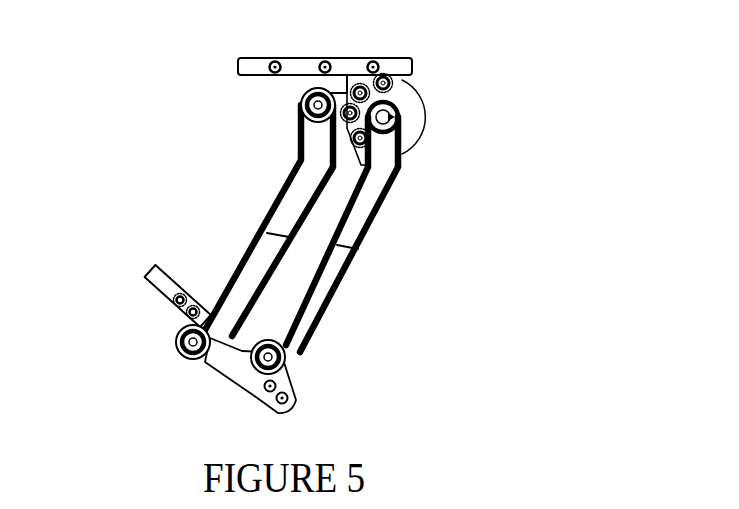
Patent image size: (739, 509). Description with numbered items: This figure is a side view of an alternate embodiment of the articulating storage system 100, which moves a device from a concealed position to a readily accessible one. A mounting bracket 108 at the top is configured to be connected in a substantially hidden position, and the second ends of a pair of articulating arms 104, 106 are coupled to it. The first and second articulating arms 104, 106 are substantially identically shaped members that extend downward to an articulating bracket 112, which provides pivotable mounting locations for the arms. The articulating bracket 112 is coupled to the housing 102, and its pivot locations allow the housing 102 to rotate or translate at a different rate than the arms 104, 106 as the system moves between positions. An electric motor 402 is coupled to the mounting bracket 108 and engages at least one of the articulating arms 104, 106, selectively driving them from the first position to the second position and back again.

The articulating storage system 100 is at (480, 99).
The housing 102 is at (157, 285).
The first articulating arm 104 is at (367, 200).
The second articulating arm 106 is at (285, 215).
The mounting bracket 108 is at (257, 68).
The articulating bracket 112 is at (245, 352).
The electric motor 402 is at (412, 122).